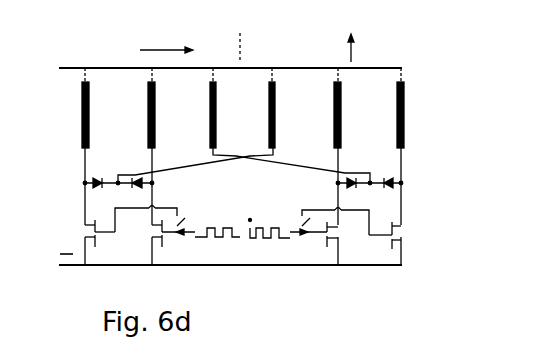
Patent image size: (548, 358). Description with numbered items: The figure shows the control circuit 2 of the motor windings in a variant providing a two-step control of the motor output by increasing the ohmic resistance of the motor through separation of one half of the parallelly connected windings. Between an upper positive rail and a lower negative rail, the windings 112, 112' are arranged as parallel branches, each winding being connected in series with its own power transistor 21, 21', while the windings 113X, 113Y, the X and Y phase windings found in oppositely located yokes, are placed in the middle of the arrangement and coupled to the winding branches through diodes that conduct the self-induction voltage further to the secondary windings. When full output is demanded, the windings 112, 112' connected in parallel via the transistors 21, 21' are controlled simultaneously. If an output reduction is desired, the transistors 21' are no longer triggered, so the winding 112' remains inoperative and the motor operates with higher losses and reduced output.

The control circuit 2 is at (63, 294).
The winding 112 is at (224, 115).
The winding 112' is at (218, 115).
The winding 113X is at (224, 93).
The winding 113Y is at (258, 100).
The transistor 21 is at (226, 240).
The transistor 21' is at (216, 264).